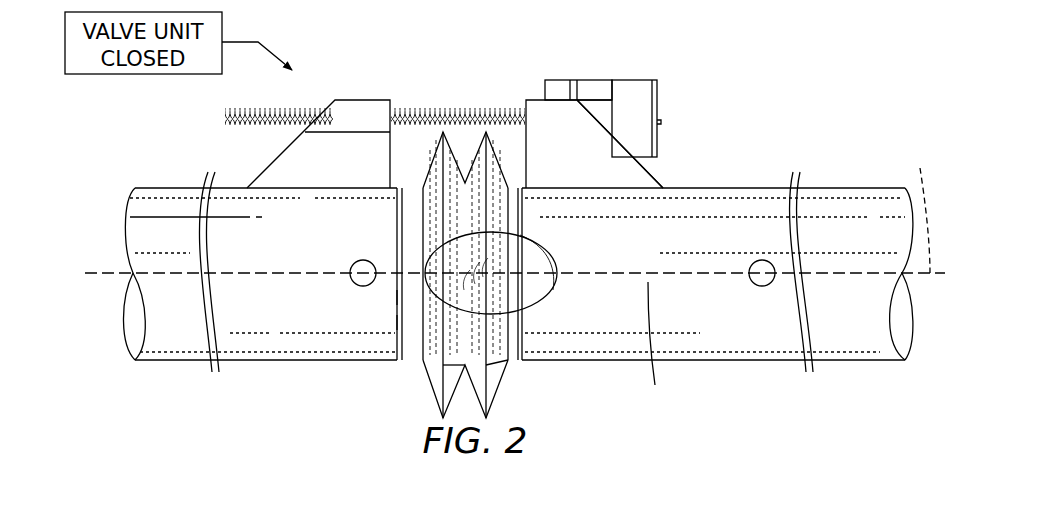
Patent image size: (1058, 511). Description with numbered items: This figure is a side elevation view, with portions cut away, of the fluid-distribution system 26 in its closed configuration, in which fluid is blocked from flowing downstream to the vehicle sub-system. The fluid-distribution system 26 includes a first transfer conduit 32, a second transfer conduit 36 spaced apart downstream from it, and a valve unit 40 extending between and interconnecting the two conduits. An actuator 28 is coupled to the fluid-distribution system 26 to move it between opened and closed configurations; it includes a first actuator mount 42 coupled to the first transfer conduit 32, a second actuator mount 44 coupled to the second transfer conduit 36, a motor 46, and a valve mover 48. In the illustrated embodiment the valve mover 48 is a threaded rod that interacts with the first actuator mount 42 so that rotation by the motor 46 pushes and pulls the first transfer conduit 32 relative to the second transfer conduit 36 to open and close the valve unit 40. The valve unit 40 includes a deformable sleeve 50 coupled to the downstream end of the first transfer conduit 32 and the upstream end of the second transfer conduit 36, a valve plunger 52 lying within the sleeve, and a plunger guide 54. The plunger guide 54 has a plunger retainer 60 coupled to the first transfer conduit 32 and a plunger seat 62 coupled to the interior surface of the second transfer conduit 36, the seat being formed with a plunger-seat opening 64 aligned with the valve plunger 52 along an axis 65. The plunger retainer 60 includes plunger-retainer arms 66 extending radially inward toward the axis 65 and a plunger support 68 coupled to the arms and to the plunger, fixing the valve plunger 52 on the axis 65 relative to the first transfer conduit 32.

The fluid-distribution system 26 is at (742, 60).
The actuator 28 is at (618, 70).
The first transfer conduit 32 is at (232, 180).
The second transfer conduit 36 is at (760, 172).
The valve unit 40 is at (465, 153).
The first actuator mount 42 is at (342, 110).
The second actuator mount 44 is at (610, 162).
The motor 46 is at (632, 92).
The valve mover 48 is at (485, 110).
The deformable sleeve 50 is at (508, 364).
The valve plunger 52 is at (456, 312).
The plunger guide 54 is at (384, 322).
The plunger retainer 60 is at (395, 298).
The plunger seat 62 is at (523, 343).
The plunger-seat opening 64 is at (560, 268).
The axis 65 is at (920, 207).
The plunger-retainer arms 66 is at (397, 223).
The plunger support 68 is at (657, 347).